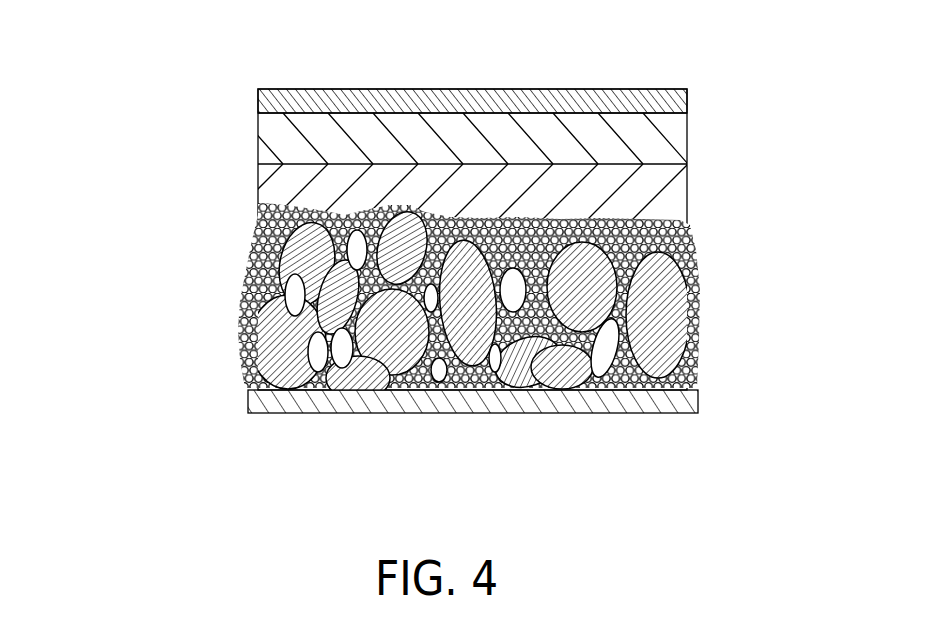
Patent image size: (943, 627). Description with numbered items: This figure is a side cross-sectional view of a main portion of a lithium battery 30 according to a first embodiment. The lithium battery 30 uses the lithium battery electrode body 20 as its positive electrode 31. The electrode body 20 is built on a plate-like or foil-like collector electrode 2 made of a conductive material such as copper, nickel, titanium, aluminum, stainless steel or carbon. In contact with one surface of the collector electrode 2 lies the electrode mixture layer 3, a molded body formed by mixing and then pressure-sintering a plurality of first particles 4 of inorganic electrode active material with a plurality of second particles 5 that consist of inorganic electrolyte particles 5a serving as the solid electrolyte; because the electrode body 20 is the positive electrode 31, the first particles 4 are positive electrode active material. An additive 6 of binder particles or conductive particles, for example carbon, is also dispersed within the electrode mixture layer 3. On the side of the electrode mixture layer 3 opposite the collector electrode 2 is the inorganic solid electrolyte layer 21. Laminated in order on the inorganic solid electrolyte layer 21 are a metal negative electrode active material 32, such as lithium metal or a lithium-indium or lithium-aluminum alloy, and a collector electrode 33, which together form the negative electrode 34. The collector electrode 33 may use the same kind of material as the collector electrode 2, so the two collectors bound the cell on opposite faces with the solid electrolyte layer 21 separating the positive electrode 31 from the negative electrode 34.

The lithium battery 30 is at (155, 90).
The collector electrode 33 is at (265, 102).
The metal negative electrode active material 32 is at (270, 140).
The negative electrode 34 is at (711, 90).
The inorganic solid electrolyte layer 21 is at (273, 187).
The positive electrode 31 is at (713, 167).
The lithium battery electrode body 20 is at (436, 344).
The electrode mixture layer 3 is at (231, 203).
The first particles 4 is at (290, 373).
The second particles 5 is at (593, 476).
The inorganic electrolyte particles 5a is at (470, 387).
The additive 6 is at (315, 370).
The collector electrode 2 is at (255, 402).